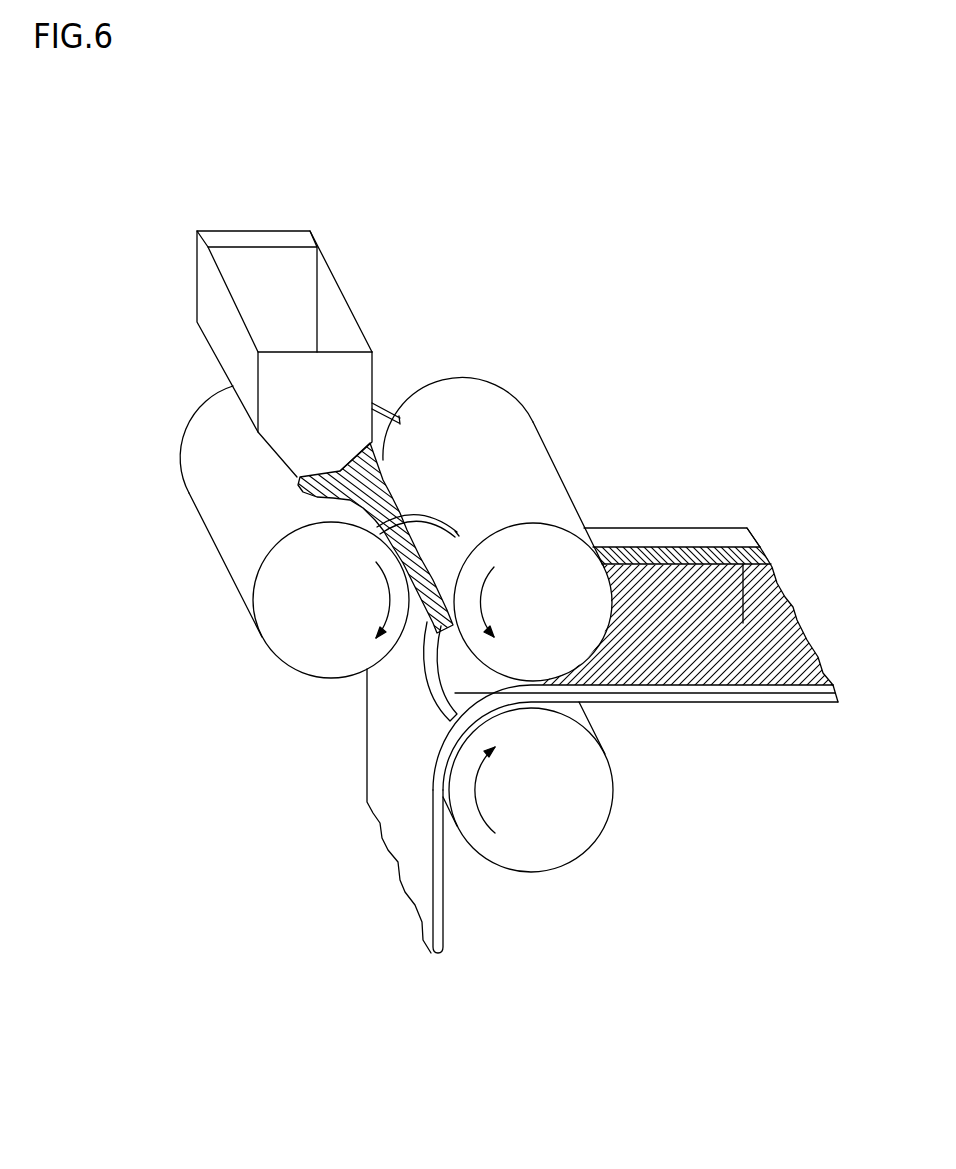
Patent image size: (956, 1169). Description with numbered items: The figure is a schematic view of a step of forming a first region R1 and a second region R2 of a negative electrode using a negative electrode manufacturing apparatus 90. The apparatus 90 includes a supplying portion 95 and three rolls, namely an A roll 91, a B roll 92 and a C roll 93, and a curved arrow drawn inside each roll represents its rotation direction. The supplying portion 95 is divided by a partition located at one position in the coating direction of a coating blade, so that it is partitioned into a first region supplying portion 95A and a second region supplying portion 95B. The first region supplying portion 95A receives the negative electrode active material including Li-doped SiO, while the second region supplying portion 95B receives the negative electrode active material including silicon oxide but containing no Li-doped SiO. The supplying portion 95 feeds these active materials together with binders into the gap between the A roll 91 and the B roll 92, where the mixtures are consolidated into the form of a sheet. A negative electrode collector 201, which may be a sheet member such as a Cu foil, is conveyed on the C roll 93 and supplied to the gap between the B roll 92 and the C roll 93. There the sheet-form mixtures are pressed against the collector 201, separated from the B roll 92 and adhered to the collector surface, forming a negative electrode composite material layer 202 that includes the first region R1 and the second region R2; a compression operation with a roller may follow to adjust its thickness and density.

The negative electrode manufacturing apparatus 90 is at (552, 170).
The A roll 91 is at (198, 423).
The B roll 92 is at (490, 395).
The C roll 93 is at (593, 826).
The supplying portion 95 is at (308, 186).
The first region supplying portion 95A is at (228, 243).
The second region supplying portion 95B is at (287, 277).
The negative electrode collector 201 is at (400, 842).
The negative electrode composite material layer 202 is at (617, 484).
The first region R1 is at (642, 555).
The second region R2 is at (747, 528).